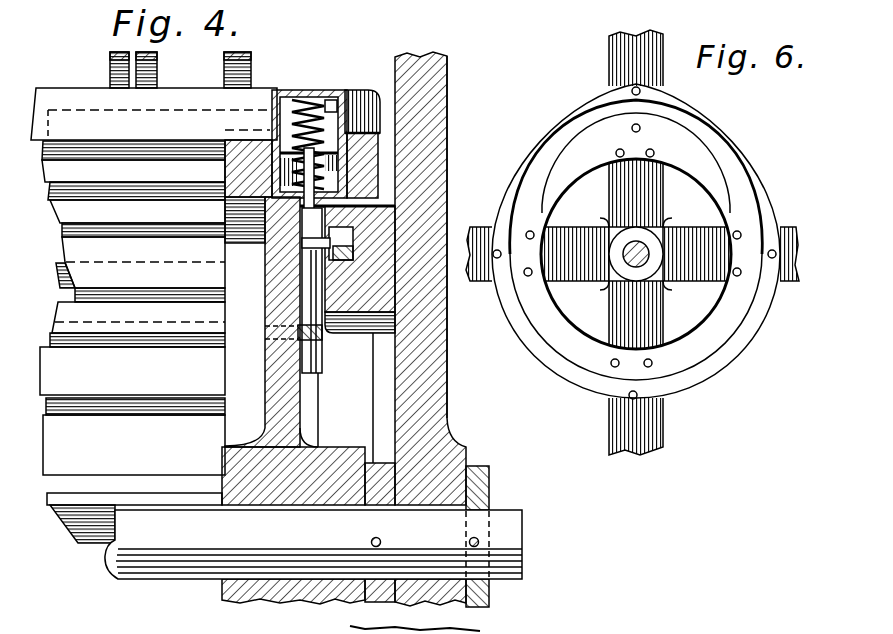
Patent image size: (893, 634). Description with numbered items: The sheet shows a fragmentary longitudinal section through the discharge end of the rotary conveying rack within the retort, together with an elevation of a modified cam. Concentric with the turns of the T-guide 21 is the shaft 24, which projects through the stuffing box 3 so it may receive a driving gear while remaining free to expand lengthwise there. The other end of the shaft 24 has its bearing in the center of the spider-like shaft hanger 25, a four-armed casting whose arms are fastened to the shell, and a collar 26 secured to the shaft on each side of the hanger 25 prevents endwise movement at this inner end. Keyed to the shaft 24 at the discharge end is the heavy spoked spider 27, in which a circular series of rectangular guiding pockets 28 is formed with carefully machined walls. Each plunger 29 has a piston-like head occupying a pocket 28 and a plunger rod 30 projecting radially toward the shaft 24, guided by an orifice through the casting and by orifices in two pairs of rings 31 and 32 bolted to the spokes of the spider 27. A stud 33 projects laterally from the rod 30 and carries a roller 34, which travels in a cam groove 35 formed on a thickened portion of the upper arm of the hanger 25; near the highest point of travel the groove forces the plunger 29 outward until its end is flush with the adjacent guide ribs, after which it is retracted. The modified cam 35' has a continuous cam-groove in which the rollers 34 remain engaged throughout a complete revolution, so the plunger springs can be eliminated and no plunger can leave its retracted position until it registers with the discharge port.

In FIG. 4, the T-guide 21 is at (116, 53).
In FIG. 4, the stuffing box 3 is at (290, 124).
In FIG. 4, the shaft 24 is at (522, 540).
In FIG. 6, the shaft 24 is at (628, 258).
In FIG. 4, the shaft hanger 25 is at (440, 132).
In FIG. 6, the shaft hanger 25 is at (608, 422).
In FIG. 4, the collar 26 is at (400, 443).
In FIG. 6, the collar 26 is at (650, 242).
In FIG. 4, the spider 27 is at (290, 412).
In FIG. 4, the guiding pocket 28 is at (352, 167).
In FIG. 4, the plunger 29 is at (314, 97).
In FIG. 4, the plunger rod 30 is at (312, 368).
In FIG. 4, the guide ring 31 is at (300, 332).
In FIG. 4, the guide ring 32 is at (282, 225).
In FIG. 4, the stud 33 is at (316, 244).
In FIG. 4, the roller 34 is at (356, 233).
In FIG. 4, the cam groove 35 is at (391, 268).
In FIG. 6, the cam 35' is at (623, 286).